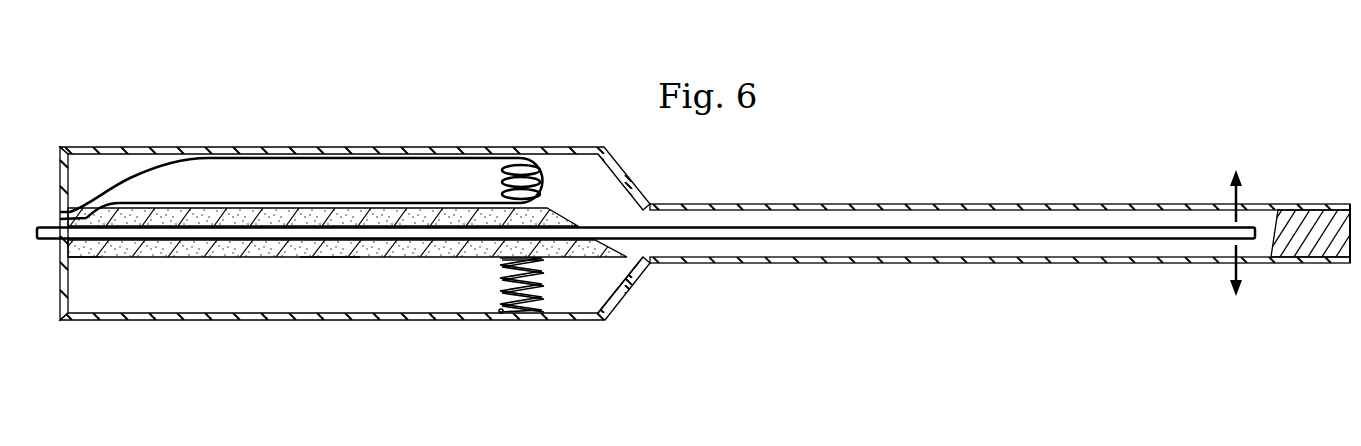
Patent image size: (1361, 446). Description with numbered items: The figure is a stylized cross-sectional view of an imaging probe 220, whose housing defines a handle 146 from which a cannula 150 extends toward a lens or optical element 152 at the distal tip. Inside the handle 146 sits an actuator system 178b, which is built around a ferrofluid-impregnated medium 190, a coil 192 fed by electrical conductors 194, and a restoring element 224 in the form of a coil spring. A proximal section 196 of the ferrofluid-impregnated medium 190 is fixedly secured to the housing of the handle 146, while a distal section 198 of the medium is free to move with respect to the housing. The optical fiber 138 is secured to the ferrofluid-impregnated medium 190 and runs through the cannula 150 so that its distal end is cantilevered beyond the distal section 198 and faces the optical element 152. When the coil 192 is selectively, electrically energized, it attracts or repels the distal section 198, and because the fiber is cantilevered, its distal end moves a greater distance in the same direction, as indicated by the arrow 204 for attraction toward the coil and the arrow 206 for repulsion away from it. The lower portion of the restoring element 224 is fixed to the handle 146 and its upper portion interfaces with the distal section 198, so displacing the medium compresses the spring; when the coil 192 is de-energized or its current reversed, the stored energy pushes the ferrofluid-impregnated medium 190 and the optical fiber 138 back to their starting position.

The handle 146 is at (297, 147).
The electrical conductors 194 is at (131, 175).
The coil 192 is at (502, 178).
The proximal section 196 is at (78, 268).
The ferrofluid-impregnated medium 190 is at (310, 258).
The restoring element 224 is at (498, 283).
The actuator system 178b is at (333, 274).
The distal section 198 is at (604, 273).
The imaging probe 220 is at (874, 160).
The optical fiber 138 is at (1036, 226).
The cannula 150 is at (1016, 264).
The optical element 152 is at (1312, 211).
The arrow 204 is at (1232, 196).
The arrow 206 is at (1232, 270).